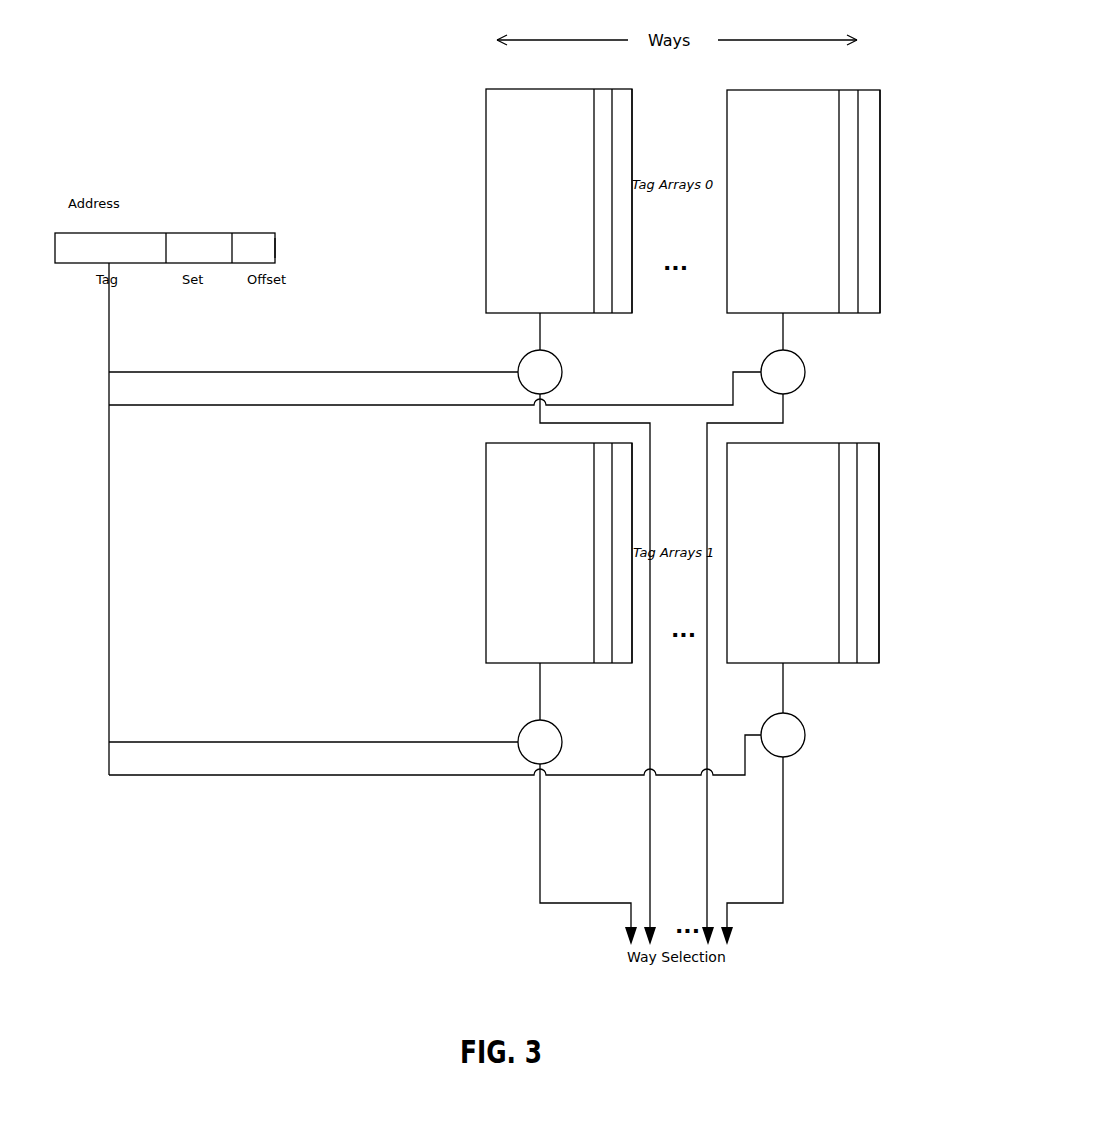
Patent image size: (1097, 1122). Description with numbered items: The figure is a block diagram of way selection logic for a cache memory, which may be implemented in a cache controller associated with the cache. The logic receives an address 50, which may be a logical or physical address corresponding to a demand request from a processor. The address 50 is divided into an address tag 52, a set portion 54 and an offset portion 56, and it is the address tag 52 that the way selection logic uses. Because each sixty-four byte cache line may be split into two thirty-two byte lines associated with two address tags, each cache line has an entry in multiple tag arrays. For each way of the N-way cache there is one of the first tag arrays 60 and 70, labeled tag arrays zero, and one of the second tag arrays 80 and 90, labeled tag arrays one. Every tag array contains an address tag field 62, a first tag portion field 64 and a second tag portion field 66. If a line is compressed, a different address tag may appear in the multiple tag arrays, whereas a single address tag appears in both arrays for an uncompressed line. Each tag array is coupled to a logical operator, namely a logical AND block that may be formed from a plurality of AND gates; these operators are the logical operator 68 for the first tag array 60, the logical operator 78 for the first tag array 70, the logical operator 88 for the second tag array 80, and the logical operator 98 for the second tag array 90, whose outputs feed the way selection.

The address 50 is at (240, 190).
The address tag 52 is at (128, 233).
The set portion 54 is at (190, 243).
The offset portion 56 is at (249, 238).
The first tag array 60 is at (495, 165).
The address tag field 62 is at (532, 100).
The first tag portion field 64 is at (603, 95).
The second tag portion field 66 is at (623, 95).
The logical operator 68 is at (520, 365).
The first tag array 70 is at (810, 313).
The logical operator 78 is at (767, 362).
The second tag array 80 is at (485, 643).
The logical operator 88 is at (528, 728).
The second tag array 90 is at (800, 664).
The logical operator 98 is at (790, 720).